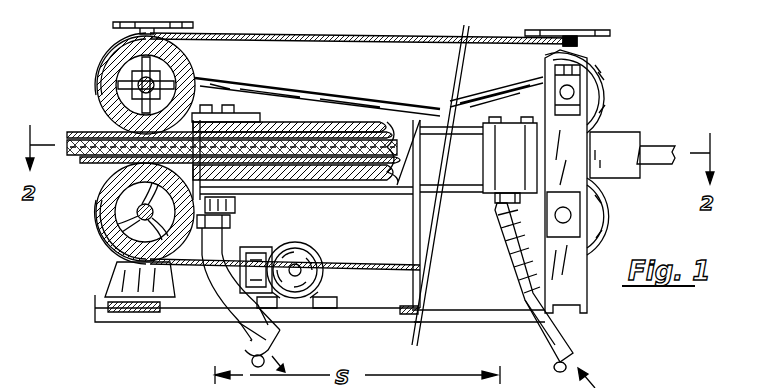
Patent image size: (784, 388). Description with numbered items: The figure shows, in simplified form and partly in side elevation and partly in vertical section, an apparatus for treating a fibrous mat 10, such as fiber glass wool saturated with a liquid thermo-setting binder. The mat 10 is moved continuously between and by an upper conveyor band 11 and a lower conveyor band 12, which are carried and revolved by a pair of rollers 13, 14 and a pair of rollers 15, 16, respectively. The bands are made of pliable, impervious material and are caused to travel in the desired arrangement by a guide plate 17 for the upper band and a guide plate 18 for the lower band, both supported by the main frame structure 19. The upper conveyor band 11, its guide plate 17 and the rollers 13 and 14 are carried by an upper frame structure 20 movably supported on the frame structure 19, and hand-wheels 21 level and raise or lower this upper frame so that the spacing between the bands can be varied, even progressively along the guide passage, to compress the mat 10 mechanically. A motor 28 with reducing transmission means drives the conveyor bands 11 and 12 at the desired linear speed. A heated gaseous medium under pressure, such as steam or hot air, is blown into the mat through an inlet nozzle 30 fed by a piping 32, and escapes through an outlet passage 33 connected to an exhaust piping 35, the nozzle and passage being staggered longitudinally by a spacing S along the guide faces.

The mat 10 is at (292, 147).
The upper conveyor band 11 is at (262, 130).
The lower conveyor band 12 is at (325, 181).
The roller 13 is at (178, 64).
The roller 14 is at (600, 90).
The roller 15 is at (108, 238).
The roller 16 is at (600, 218).
The guide plate 17 is at (344, 127).
The guide plate 18 is at (265, 166).
The main frame structure 19 is at (365, 185).
The upper frame structure 20 is at (485, 103).
The hand-wheel 21 is at (120, 26).
The motor 28 is at (296, 285).
The nozzle 30 is at (513, 157).
The piping 32 is at (575, 305).
The outlet passage 33 is at (201, 364).
The exhaust piping 35 is at (240, 330).